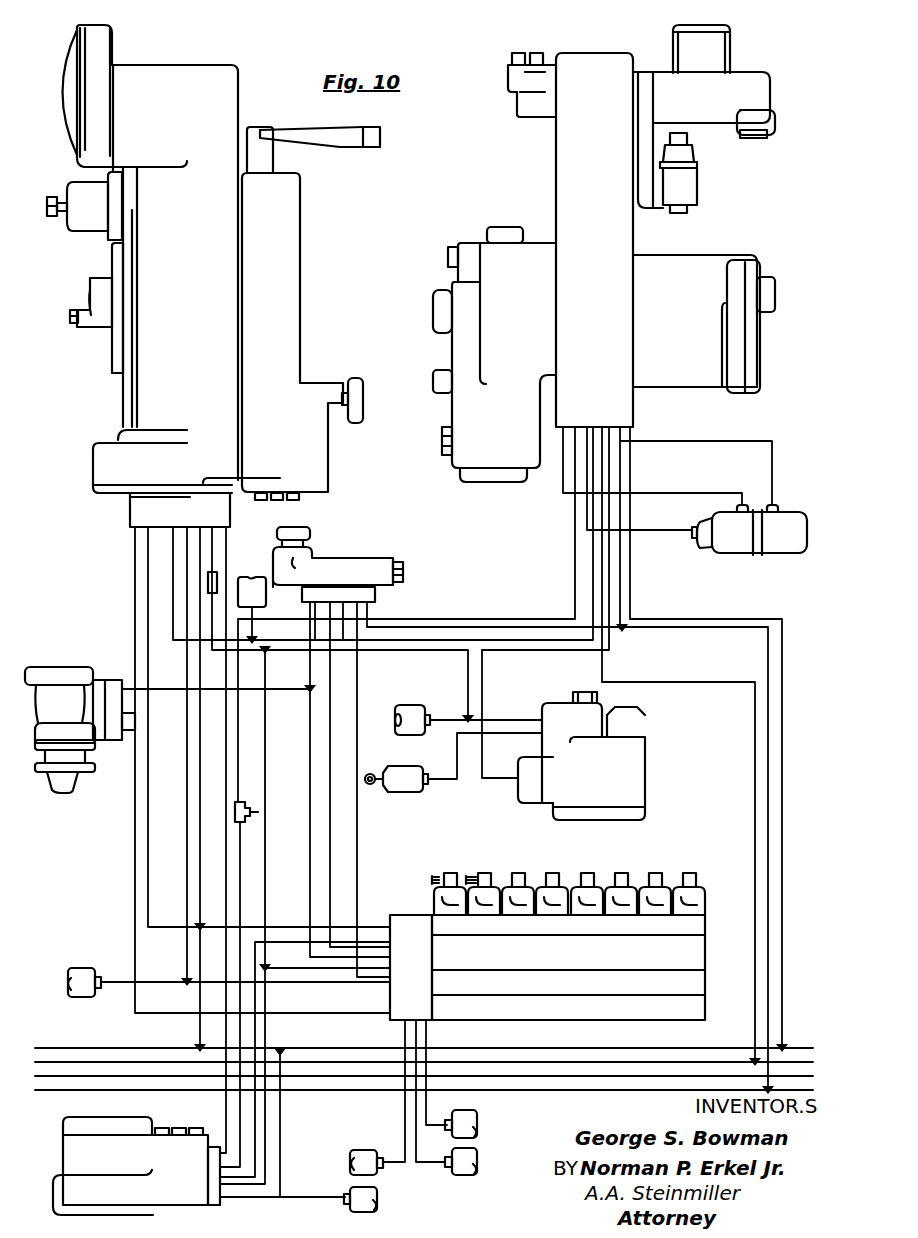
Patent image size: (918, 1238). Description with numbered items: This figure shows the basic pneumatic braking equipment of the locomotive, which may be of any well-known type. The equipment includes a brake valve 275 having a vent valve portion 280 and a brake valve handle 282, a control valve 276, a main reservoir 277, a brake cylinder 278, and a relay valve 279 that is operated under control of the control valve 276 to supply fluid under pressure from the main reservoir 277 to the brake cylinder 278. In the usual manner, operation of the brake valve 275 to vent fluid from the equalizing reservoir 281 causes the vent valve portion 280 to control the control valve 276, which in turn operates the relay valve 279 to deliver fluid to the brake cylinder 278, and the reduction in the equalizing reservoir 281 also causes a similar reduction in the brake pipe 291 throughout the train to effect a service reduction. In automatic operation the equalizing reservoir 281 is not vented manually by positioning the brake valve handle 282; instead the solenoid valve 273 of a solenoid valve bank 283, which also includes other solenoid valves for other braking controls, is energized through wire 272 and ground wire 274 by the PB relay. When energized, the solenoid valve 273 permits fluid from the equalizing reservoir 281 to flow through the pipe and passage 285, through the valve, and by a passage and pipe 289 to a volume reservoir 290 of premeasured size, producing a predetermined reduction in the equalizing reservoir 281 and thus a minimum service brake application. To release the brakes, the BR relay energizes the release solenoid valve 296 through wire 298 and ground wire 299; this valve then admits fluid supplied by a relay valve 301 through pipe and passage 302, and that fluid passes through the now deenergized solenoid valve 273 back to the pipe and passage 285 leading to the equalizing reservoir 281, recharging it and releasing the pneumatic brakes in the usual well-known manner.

The wire 272 is at (433, 878).
The solenoid valve 273 is at (447, 873).
The ground wire 274 is at (435, 885).
The brake valve 275 is at (187, 73).
The control valve 276 is at (585, 60).
The main reservoir 277 is at (407, 704).
The brake cylinder 278 is at (408, 793).
The relay valve 279 is at (645, 764).
The vent valve portion 280 is at (95, 283).
The equalizing reservoir 281 is at (78, 970).
The brake valve handle 282 is at (363, 142).
The solenoid valve bank 283 is at (700, 942).
The pipe and passage 285 is at (335, 985).
The passage and pipe 289 is at (427, 1035).
The volume reservoir 290 is at (470, 1118).
The brake pipe 291 is at (75, 1048).
The release solenoid valve 296 is at (485, 880).
The wire 298 is at (467, 873).
The ground wire 299 is at (473, 883).
The relay valve 301 is at (48, 665).
The pipe and passage 302 is at (333, 1018).